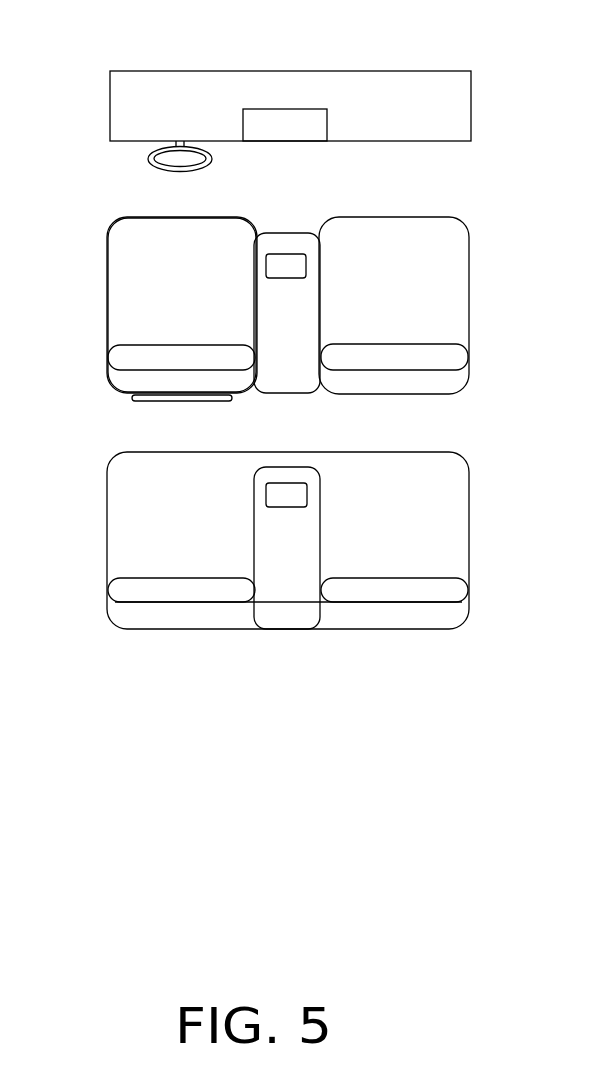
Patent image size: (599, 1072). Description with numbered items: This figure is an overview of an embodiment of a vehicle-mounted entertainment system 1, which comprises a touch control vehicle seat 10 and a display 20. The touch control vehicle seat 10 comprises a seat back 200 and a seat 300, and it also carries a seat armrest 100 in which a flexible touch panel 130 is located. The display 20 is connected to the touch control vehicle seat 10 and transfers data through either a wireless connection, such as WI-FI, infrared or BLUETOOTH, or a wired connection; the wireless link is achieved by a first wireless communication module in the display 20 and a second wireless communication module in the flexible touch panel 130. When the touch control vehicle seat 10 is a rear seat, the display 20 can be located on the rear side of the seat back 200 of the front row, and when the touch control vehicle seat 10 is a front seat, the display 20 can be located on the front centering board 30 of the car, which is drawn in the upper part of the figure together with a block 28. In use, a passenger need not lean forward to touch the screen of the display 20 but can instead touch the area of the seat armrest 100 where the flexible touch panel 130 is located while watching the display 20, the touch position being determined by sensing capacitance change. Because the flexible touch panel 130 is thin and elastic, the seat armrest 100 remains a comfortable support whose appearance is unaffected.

The vehicle-mounted entertainment system 1 is at (178, 32).
The touch control vehicle seat 10 is at (100, 261).
The display 20 is at (140, 396).
The controller 28 is at (305, 135).
The front centering board 30 is at (123, 95).
The seat armrest 100 is at (288, 302).
The flexible touch panel 130 is at (278, 254).
The seat back 200 is at (128, 352).
The seat 300 is at (126, 283).